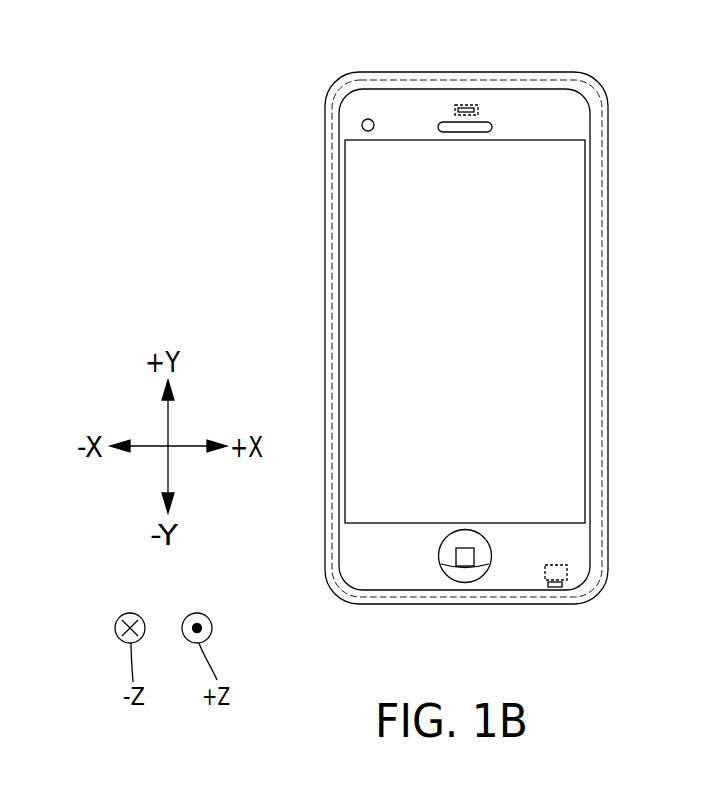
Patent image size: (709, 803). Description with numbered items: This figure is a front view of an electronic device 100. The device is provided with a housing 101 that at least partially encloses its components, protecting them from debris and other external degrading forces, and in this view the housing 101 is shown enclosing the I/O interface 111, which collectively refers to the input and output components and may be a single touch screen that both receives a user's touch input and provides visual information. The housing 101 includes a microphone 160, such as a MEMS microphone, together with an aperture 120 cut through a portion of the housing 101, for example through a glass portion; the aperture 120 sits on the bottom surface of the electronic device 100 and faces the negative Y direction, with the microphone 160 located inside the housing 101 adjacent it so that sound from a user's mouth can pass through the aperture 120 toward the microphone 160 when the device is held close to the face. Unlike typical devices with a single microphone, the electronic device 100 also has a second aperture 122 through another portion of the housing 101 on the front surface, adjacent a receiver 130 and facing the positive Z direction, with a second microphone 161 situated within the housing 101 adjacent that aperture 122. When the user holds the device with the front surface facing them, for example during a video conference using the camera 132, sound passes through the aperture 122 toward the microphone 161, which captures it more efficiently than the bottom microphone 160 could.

The electronic device 100 is at (480, 650).
The housing 101 is at (607, 335).
The I/O interface 111 is at (346, 193).
The aperture 120 is at (556, 587).
The aperture 122 is at (470, 104).
The receiver 130 is at (492, 122).
The camera 132 is at (368, 119).
The microphone 160 is at (568, 568).
The microphone 161 is at (480, 110).